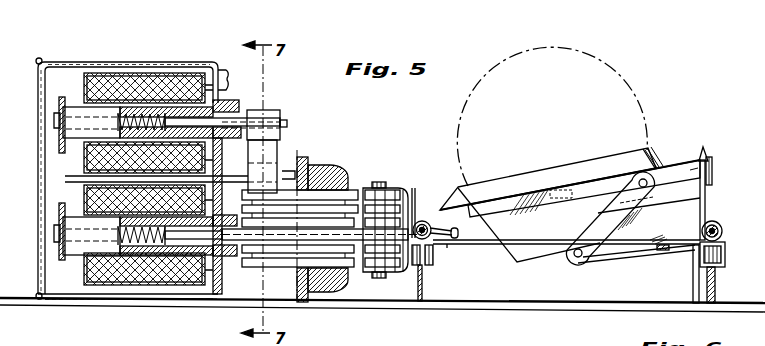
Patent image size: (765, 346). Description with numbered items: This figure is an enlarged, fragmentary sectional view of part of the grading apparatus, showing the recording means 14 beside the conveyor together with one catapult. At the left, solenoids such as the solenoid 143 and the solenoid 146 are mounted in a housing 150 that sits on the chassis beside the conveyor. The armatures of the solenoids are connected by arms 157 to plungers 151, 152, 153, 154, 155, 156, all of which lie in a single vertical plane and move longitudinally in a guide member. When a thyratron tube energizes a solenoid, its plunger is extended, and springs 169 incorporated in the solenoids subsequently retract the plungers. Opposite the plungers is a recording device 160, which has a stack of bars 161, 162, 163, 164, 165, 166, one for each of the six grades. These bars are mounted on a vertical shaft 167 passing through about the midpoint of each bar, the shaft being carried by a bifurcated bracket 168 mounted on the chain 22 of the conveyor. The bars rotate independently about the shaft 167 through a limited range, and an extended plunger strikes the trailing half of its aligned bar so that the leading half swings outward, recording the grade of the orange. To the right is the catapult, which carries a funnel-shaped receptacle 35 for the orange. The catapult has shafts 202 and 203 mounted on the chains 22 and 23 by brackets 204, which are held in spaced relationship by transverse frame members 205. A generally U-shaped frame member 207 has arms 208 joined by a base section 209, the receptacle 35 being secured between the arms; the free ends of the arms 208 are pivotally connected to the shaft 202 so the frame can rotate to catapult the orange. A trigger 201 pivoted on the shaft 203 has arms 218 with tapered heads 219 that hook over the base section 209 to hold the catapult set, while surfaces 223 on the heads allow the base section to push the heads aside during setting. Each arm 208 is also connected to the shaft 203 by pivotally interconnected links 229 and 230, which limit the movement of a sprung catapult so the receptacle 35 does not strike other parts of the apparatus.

The recording means 14 is at (161, 63).
The endless chain 22 is at (434, 265).
The endless chain 23 is at (721, 270).
The receptacle 35 is at (653, 150).
The solenoid 143 is at (144, 268).
The solenoid 146 is at (170, 82).
The housing 150 is at (87, 62).
The plunger 151 is at (322, 292).
The plunger 152 is at (335, 282).
The plunger 153 is at (346, 272).
The plunger 154 is at (318, 200).
The plunger 155 is at (345, 215).
The plunger 156 is at (350, 262).
The arm 157 is at (277, 142).
The recording device 160 is at (371, 172).
The bar 161 is at (370, 255).
The bar 162 is at (383, 278).
The bar 163 is at (389, 246).
The bar 164 is at (382, 195).
The bar 165 is at (385, 215).
The bar 166 is at (395, 200).
The vertical shaft 167 is at (410, 195).
The bifurcated bracket 168 is at (415, 208).
The spring 169 is at (126, 112).
The trigger 201 is at (692, 263).
The shaft 202 is at (432, 226).
The shaft 203 is at (690, 249).
The bracket 204 is at (446, 246).
The transverse frame member 205 is at (493, 242).
The U-shaped frame member 207 is at (669, 167).
The arm 208 is at (499, 200).
The base section 209 is at (712, 172).
The trigger arm 218 is at (712, 184).
The tapered head 219 is at (584, 188).
The surface 223 is at (708, 157).
The link 229 is at (638, 215).
The link 230 is at (603, 262).